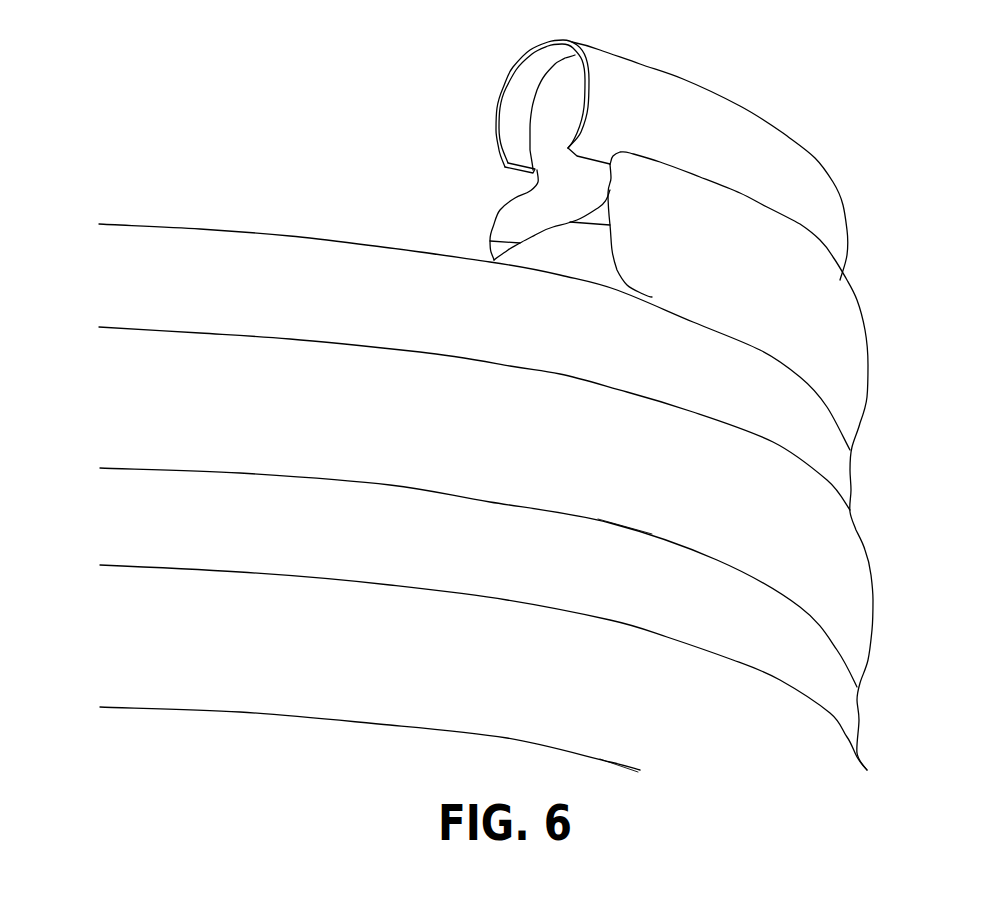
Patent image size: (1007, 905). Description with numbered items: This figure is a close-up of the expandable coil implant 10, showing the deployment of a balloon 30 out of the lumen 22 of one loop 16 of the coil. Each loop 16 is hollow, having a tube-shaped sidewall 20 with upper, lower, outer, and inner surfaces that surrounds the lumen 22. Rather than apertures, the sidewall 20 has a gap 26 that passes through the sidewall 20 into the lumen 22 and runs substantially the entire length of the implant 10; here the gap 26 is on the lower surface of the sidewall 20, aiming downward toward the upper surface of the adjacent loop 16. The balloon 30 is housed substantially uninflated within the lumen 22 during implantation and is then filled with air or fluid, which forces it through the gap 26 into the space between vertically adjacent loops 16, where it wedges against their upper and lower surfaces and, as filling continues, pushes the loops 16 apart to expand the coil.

The expandable coil implant 10 is at (743, 147).
The expandable loop 16 is at (840, 239).
The sidewall 20 is at (628, 93).
The lumen 22 is at (522, 92).
The gap 26 is at (535, 168).
The balloon 30 is at (552, 129).